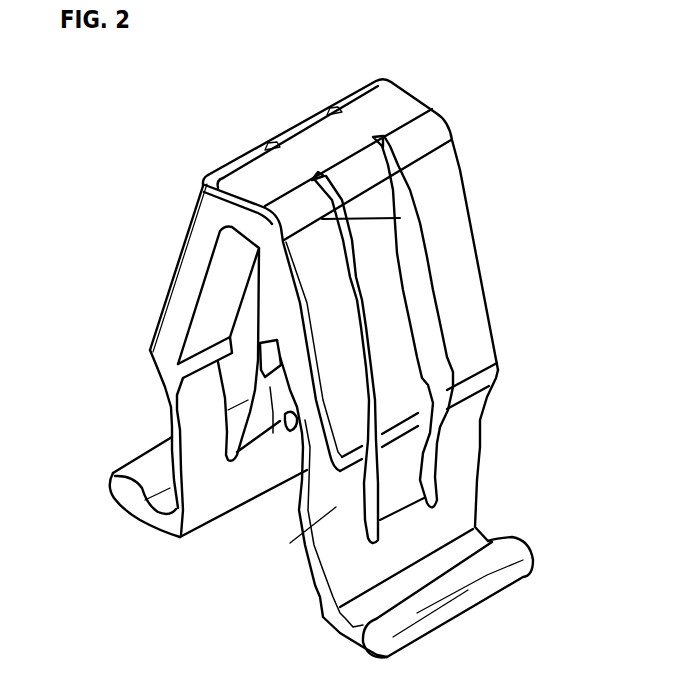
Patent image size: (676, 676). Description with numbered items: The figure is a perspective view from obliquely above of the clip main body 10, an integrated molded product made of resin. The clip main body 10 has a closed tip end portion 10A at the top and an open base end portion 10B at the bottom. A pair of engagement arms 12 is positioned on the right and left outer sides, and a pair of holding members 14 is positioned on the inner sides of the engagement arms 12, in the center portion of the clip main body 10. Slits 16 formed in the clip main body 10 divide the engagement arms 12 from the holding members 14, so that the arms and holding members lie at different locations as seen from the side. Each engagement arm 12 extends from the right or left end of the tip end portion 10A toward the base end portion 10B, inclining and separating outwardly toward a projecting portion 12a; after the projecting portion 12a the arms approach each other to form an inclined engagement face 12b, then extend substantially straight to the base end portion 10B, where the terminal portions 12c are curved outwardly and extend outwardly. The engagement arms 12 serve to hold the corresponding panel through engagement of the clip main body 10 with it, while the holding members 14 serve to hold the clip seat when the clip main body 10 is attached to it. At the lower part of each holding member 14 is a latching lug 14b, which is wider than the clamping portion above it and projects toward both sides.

The clip main body 10 is at (458, 108).
The tip end portion 10A is at (280, 123).
The base end portion 10B is at (221, 568).
The engagement arms 12 is at (168, 296).
The projecting portions 12a is at (148, 353).
The inclined engagement faces 12b is at (153, 374).
The terminal portions 12c is at (116, 486).
The holding members 14 is at (256, 318).
The latching lugs 14b is at (273, 430).
The slits 16 is at (252, 272).